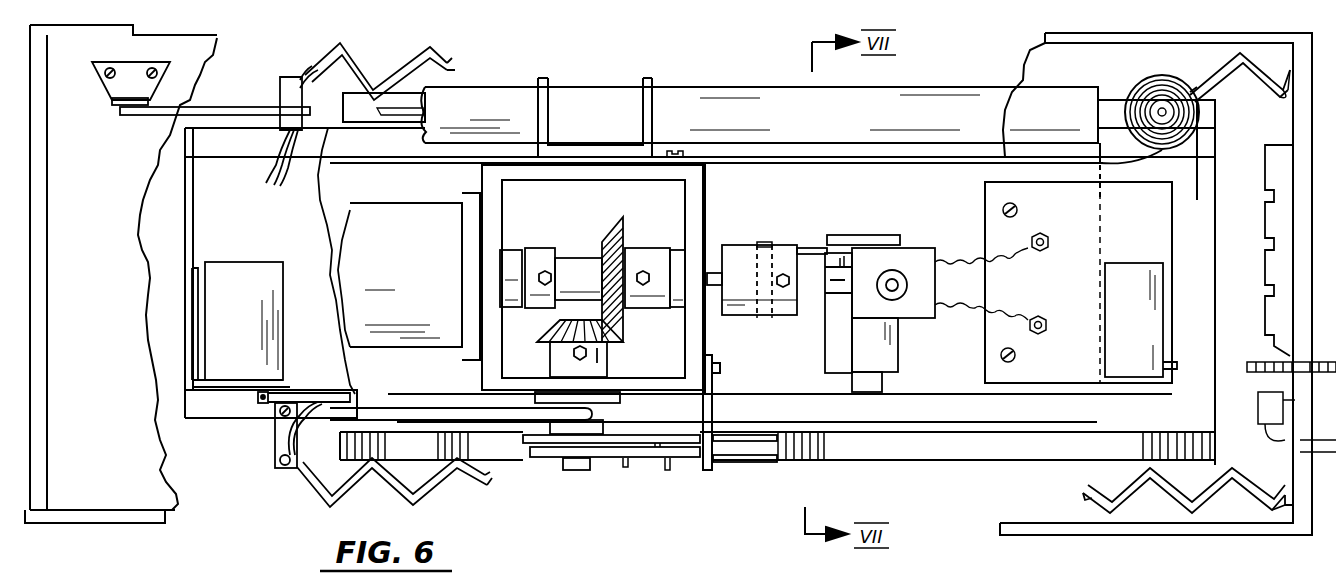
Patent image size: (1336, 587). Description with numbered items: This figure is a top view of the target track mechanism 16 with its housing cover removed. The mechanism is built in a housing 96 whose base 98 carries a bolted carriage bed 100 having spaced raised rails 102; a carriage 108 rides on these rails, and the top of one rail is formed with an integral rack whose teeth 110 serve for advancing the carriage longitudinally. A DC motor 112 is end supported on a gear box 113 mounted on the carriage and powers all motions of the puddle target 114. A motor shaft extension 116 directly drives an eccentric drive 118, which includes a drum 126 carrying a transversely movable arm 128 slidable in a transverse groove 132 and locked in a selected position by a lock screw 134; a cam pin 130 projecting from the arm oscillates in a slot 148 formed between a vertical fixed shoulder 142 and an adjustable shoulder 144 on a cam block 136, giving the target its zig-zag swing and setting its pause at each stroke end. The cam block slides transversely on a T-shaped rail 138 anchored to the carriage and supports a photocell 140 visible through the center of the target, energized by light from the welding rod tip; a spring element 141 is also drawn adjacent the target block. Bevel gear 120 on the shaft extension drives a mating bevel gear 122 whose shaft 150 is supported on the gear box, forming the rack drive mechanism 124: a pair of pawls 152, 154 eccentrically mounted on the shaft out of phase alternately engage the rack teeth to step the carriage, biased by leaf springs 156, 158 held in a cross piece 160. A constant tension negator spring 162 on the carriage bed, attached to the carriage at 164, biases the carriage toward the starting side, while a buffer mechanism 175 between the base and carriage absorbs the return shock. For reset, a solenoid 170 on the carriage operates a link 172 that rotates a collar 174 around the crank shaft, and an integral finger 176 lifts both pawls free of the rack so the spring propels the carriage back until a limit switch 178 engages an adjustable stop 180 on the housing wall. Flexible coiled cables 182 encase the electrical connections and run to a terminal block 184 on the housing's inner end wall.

The target track mechanism 16 is at (908, 84).
The housing 96 is at (1065, 525).
The base 98 is at (80, 410).
The carriage bed 100 is at (1178, 225).
The raised rails 102 is at (412, 92).
The carriage 108 is at (919, 199).
The rack teeth 110 is at (352, 452).
The DC motor 112 is at (379, 249).
The gear box 113 is at (478, 181).
The target 114 is at (901, 266).
The motor shaft extension 116 is at (709, 272).
The eccentric drive 118 is at (730, 320).
The bevel gear 120 is at (623, 228).
The bevel gear 122 is at (545, 333).
The rack drive mechanism 124 is at (559, 291).
The drum 126 is at (731, 279).
The arm 128 is at (762, 245).
The cam pin 130 is at (808, 247).
The transverse groove 132 is at (758, 243).
The pivot 134 is at (790, 283).
The cam block 136 is at (861, 361).
The T-shaped rail 138 is at (850, 385).
The photocell 140 is at (902, 288).
The spring 141 is at (948, 315).
The fixed shoulder 142 is at (840, 233).
The adjustable shoulder 144 is at (848, 268).
The slot 148 is at (842, 252).
The shaft 150 is at (575, 471).
The pawl 152 is at (626, 462).
The pawl 154 is at (657, 447).
The leaf spring 156 is at (780, 462).
The leaf spring 158 is at (770, 441).
The cross piece 160 is at (714, 377).
The negator spring 162 is at (1153, 76).
The spring attachment point 164 is at (684, 154).
The solenoid 170 is at (229, 314).
The link 172 is at (330, 392).
The collar 174 is at (618, 413).
The buffer mechanism 175 is at (464, 114).
The finger 176 is at (668, 470).
The limit switch 178 is at (1119, 334).
The adjustable stop 180 is at (1262, 361).
The flexible coiled cables 182 is at (408, 43).
The terminal block 184 is at (1276, 143).